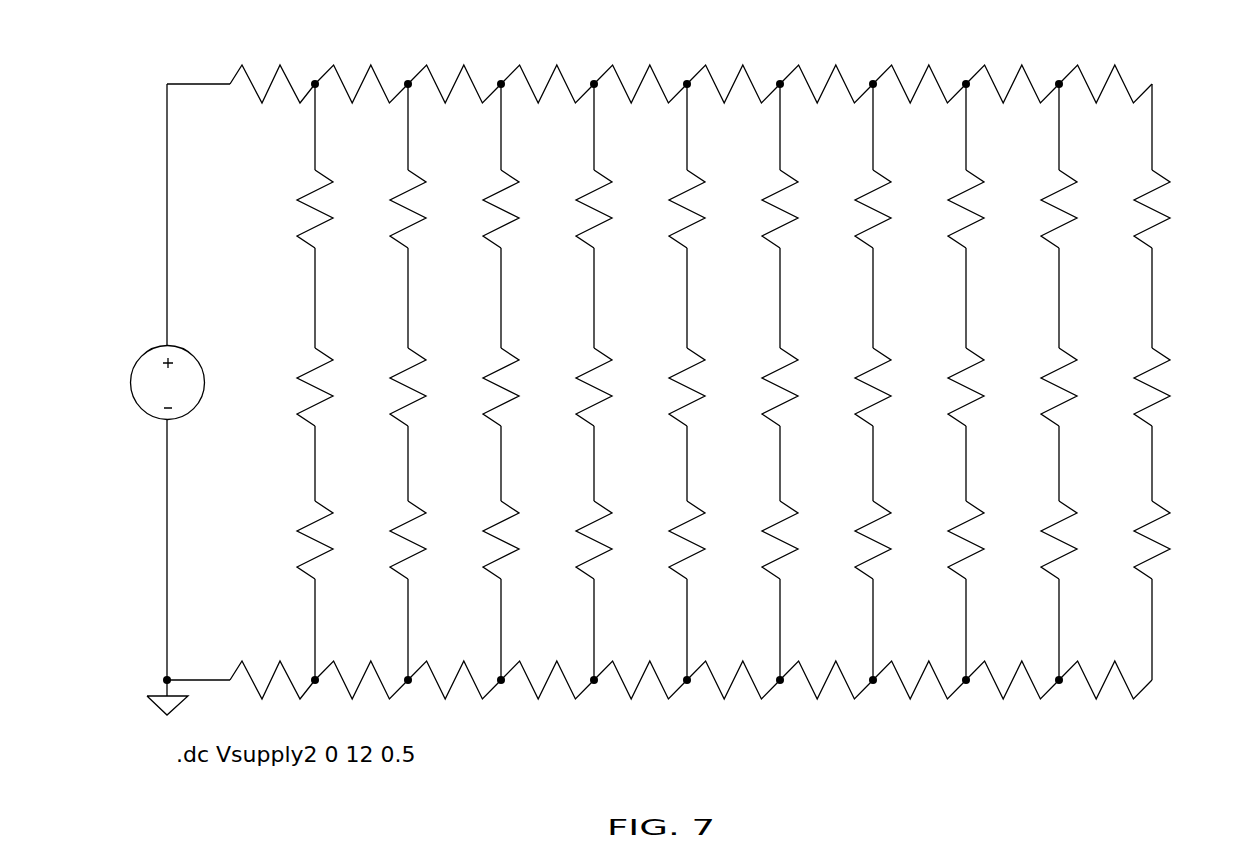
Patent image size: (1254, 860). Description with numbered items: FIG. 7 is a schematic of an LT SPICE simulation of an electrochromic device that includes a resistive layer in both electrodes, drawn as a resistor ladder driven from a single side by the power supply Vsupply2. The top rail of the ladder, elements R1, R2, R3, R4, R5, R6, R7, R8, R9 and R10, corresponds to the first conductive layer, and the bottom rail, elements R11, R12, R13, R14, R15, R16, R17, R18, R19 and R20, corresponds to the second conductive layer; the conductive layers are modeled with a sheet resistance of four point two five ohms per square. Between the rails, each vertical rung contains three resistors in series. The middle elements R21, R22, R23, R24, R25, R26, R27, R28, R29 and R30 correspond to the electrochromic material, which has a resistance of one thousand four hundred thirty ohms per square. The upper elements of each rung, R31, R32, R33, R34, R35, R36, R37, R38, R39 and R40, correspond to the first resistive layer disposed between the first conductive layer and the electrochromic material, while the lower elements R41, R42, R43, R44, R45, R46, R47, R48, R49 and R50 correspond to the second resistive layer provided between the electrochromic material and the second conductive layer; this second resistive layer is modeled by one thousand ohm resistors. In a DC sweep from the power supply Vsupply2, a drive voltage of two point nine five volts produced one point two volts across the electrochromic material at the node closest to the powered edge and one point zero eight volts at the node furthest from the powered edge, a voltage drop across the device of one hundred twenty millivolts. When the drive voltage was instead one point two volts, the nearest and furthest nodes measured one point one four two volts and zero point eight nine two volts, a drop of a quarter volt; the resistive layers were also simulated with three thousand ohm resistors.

The voltage source Vsupply2 is at (141, 394).
The first conductive layer element R1 is at (272, 85).
The first conductive layer element R2 is at (361, 85).
The first conductive layer element R3 is at (454, 85).
The first conductive layer element R4 is at (547, 85).
The first conductive layer element R5 is at (640, 85).
The first conductive layer element R6 is at (733, 85).
The first conductive layer element R7 is at (826, 85).
The first conductive layer element R8 is at (919, 85).
The first conductive layer element R9 is at (1012, 85).
The first conductive layer element R10 is at (1105, 85).
The second conductive layer element R11 is at (272, 678).
The second conductive layer element R12 is at (361, 678).
The second conductive layer element R13 is at (454, 678).
The second conductive layer element R14 is at (547, 678).
The second conductive layer element R15 is at (640, 678).
The second conductive layer element R16 is at (733, 678).
The second conductive layer element R17 is at (826, 678).
The second conductive layer element R18 is at (919, 678).
The second conductive layer element R19 is at (1012, 678).
The second conductive layer element R20 is at (1105, 678).
The electrochromic material element R21 is at (285, 387).
The electrochromic material element R22 is at (378, 387).
The electrochromic material element R23 is at (471, 387).
The electrochromic material element R24 is at (564, 387).
The electrochromic material element R25 is at (657, 387).
The electrochromic material element R26 is at (750, 387).
The electrochromic material element R27 is at (843, 387).
The electrochromic material element R28 is at (936, 387).
The electrochromic material element R29 is at (1029, 387).
The electrochromic material element R30 is at (1122, 387).
The resistive layer element R31 is at (343, 209).
The resistive layer element R32 is at (436, 209).
The resistive layer element R33 is at (529, 209).
The resistive layer element R34 is at (622, 209).
The resistive layer element R35 is at (715, 209).
The resistive layer element R36 is at (808, 209).
The resistive layer element R37 is at (901, 209).
The resistive layer element R38 is at (994, 209).
The resistive layer element R39 is at (1087, 209).
The resistive layer element R40 is at (1180, 209).
The second resistive layer element R41 is at (343, 541).
The second resistive layer element R42 is at (436, 541).
The second resistive layer element R43 is at (529, 541).
The second resistive layer element R44 is at (622, 541).
The second resistive layer element R45 is at (715, 541).
The second resistive layer element R46 is at (808, 541).
The second resistive layer element R47 is at (901, 541).
The second resistive layer element R48 is at (994, 541).
The second resistive layer element R49 is at (1087, 541).
The second resistive layer element R50 is at (1180, 541).